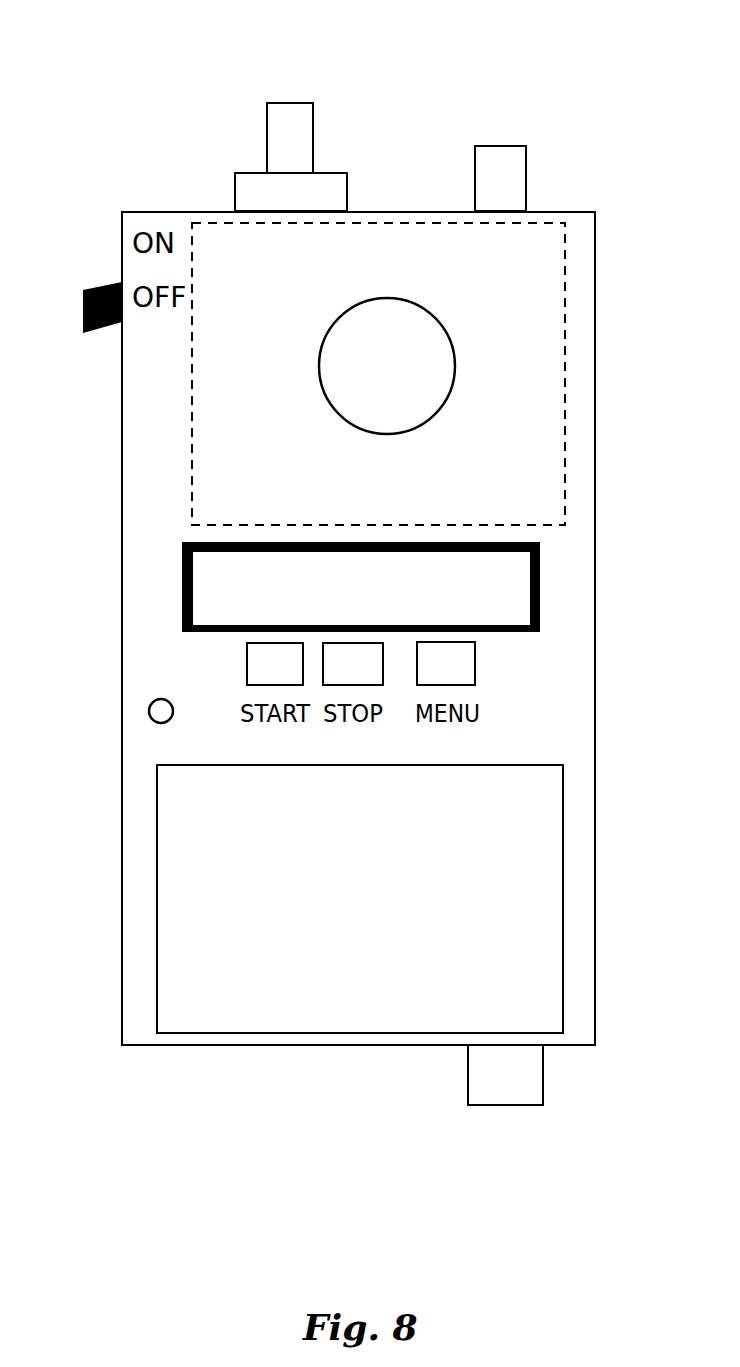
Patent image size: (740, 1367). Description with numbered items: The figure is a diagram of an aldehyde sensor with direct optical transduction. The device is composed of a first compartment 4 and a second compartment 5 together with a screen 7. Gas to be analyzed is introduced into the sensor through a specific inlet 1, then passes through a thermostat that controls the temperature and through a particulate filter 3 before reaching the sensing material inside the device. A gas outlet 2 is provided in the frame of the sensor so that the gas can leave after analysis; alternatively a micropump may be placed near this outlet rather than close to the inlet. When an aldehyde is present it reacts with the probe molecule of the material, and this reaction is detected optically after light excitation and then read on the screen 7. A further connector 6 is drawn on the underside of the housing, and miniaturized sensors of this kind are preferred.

The inlet 1 is at (243, 110).
The gas outlet 2 is at (535, 137).
The particulate filter 3 is at (228, 195).
The first compartment 4 is at (192, 360).
The second compartment 5 is at (145, 928).
The bottom connector 6 is at (447, 1080).
The screen 7 is at (550, 567).